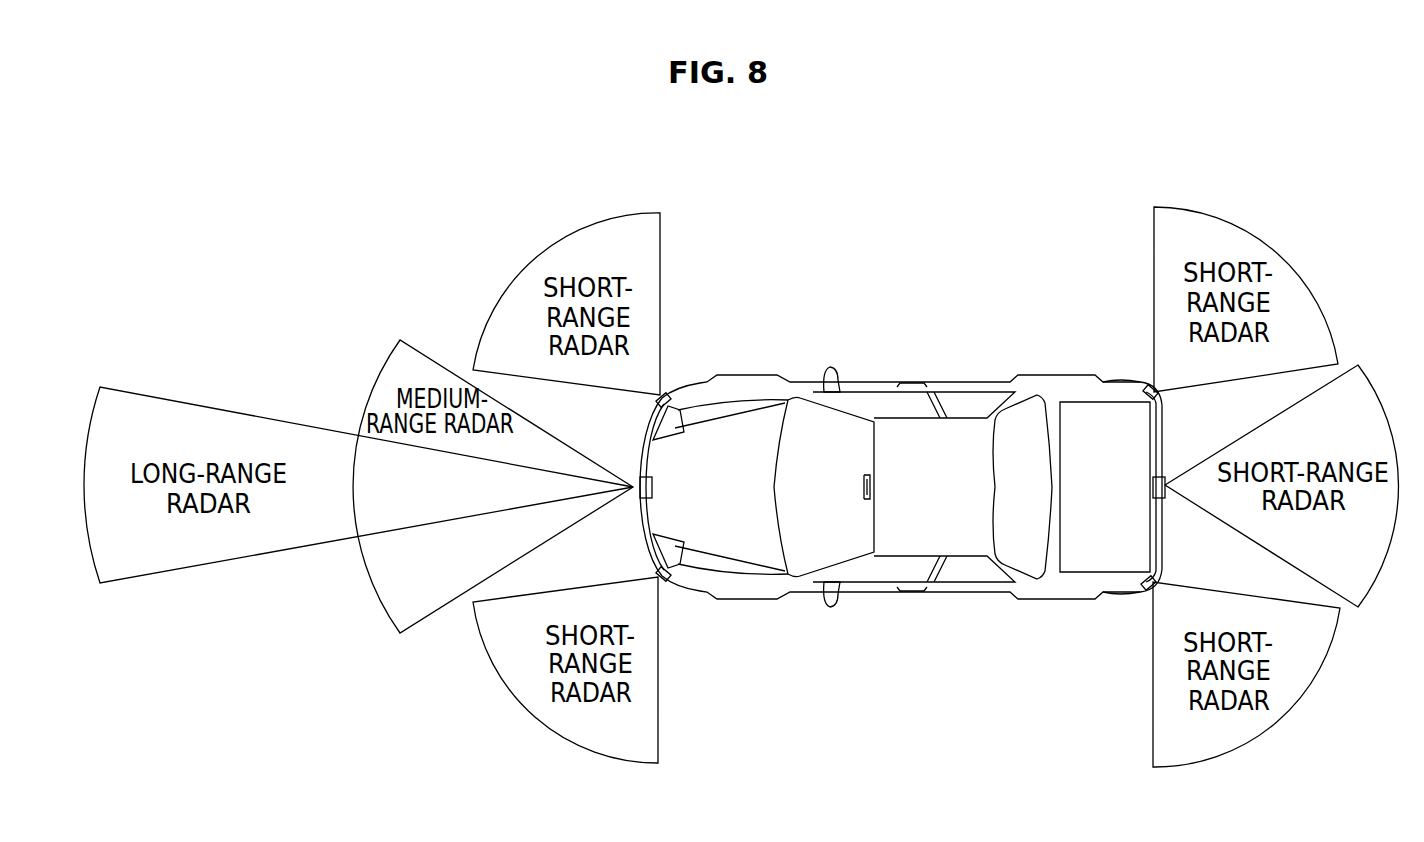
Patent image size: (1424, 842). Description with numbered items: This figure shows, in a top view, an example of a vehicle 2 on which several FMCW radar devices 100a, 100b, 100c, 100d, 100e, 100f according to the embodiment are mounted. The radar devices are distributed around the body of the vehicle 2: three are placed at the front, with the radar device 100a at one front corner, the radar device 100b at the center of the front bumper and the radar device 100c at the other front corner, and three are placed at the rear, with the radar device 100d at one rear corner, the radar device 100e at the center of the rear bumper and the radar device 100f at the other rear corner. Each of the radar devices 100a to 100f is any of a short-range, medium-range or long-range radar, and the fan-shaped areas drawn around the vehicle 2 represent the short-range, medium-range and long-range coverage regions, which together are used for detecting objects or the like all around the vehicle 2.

The vehicle 2 is at (952, 381).
The FMCW radar device 100a is at (668, 392).
The FMCW radar device 100b is at (634, 495).
The FMCW radar device 100c is at (667, 586).
The FMCW radar device 100d is at (1149, 392).
The FMCW radar device 100e is at (1167, 483).
The FMCW radar device 100f is at (1150, 584).